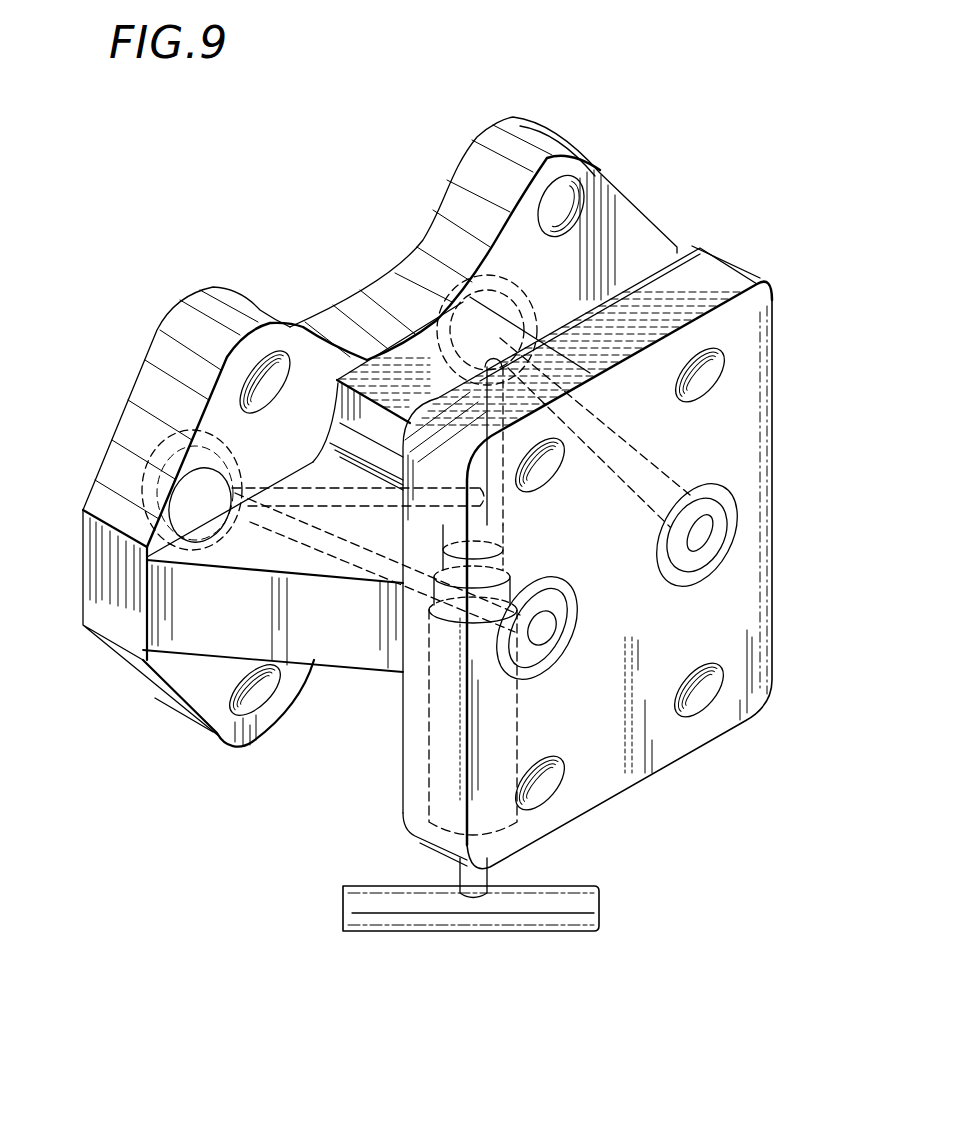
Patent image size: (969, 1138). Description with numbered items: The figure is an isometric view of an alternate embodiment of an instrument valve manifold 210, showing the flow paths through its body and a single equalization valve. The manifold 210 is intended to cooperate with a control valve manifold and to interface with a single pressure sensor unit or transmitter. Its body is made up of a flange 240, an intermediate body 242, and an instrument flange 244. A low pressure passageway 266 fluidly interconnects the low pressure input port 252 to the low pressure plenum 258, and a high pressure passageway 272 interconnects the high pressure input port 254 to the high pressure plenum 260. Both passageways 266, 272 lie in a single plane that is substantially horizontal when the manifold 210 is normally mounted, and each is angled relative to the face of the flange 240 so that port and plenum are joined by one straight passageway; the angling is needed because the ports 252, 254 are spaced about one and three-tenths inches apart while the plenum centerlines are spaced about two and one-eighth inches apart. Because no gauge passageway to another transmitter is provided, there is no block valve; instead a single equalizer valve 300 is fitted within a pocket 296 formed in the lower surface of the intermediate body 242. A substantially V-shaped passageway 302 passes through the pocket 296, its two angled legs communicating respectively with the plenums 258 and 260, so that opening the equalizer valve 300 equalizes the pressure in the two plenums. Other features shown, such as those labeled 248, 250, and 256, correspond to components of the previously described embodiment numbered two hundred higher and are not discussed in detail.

The instrument valve manifold 210 is at (700, 210).
The flange 240 is at (403, 783).
The intermediate body 242 is at (347, 650).
The instrument flange 244 is at (150, 390).
The mounting hole 248 is at (717, 348).
The top lug 250 is at (593, 167).
The low pressure input port 252 is at (705, 530).
The high pressure input port 254 is at (540, 627).
The washer flange 256 is at (708, 566).
The low pressure plenum 258 is at (470, 320).
The high pressure plenum 260 is at (180, 500).
The low pressure passageway 266 is at (643, 465).
The high pressure passageway 272 is at (317, 553).
The pocket 296 is at (493, 563).
The equalizer valve 300 is at (375, 933).
The V-shaped passageway 302 is at (505, 508).